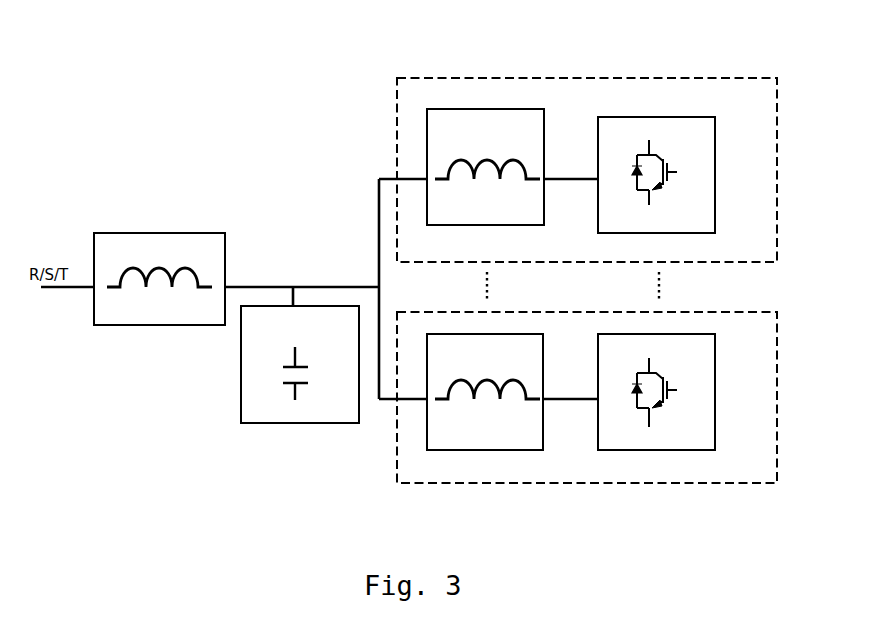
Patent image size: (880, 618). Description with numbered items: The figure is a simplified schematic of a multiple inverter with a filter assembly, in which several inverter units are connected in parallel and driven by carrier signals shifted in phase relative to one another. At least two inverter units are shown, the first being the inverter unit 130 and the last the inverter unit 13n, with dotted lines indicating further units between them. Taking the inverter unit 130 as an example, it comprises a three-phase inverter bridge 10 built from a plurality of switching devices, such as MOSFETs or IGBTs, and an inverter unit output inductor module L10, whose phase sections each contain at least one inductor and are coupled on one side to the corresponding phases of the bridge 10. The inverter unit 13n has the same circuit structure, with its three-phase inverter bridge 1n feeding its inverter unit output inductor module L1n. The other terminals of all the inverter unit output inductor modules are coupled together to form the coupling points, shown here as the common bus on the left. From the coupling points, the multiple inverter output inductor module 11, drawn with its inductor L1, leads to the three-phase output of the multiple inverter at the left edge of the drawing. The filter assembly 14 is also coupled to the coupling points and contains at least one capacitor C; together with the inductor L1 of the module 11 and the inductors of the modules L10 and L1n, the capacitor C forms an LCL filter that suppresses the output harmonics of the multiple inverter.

The multiple inverter output inductor module 11 is at (163, 244).
The filter assembly 14 is at (265, 366).
The inverter unit 130 is at (587, 138).
The three-phase inverter bridge 10 is at (716, 169).
The inverter unit 13n is at (587, 426).
The three-phase inverter bridge 1n is at (716, 388).
The inductor L1 is at (163, 233).
The inverter unit output inductor module L10 is at (458, 226).
The inverter unit output inductor module L1n is at (458, 450).
The capacitor C is at (285, 373).